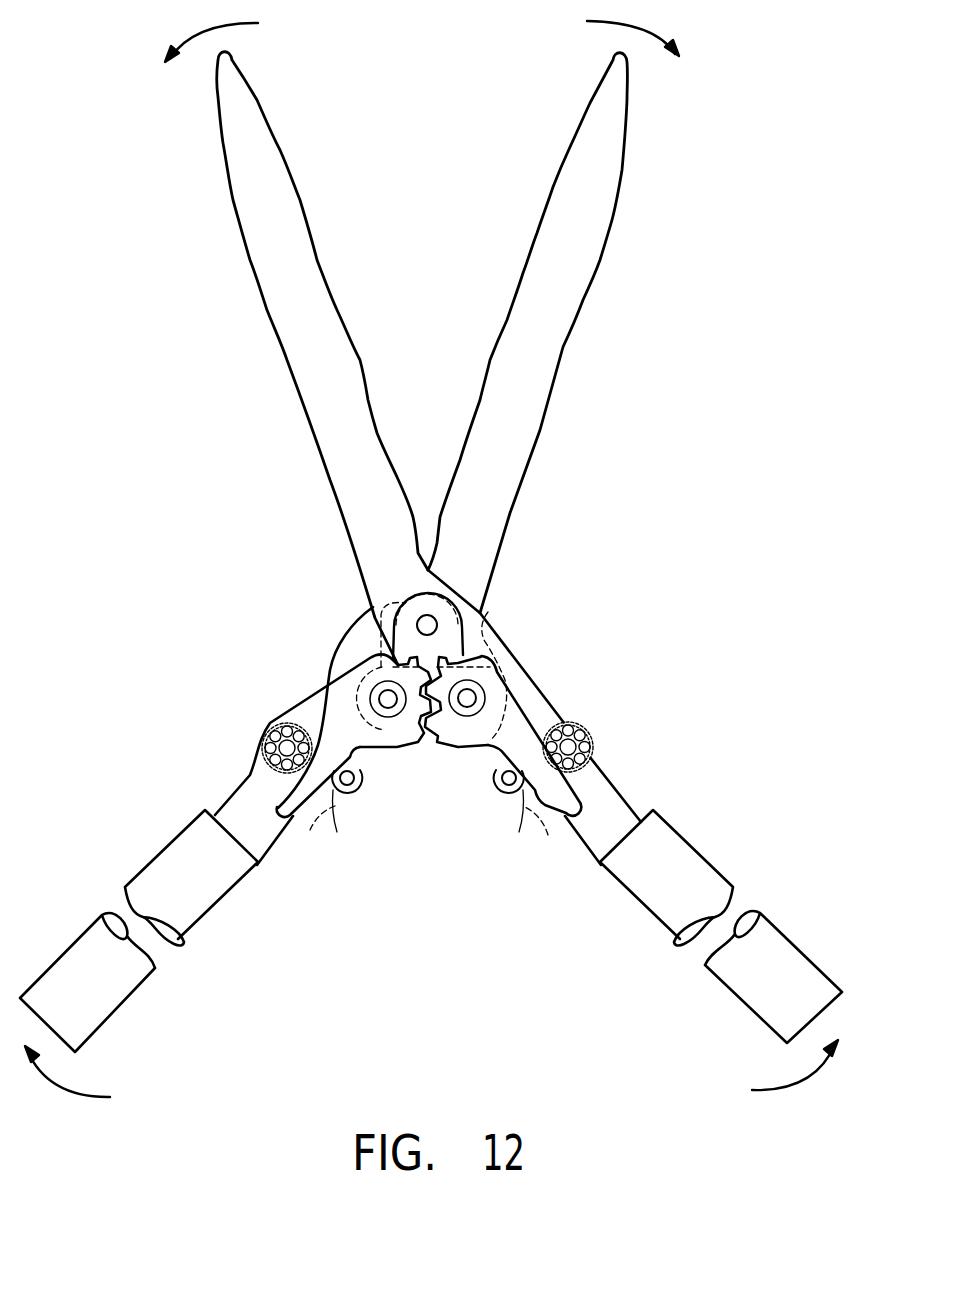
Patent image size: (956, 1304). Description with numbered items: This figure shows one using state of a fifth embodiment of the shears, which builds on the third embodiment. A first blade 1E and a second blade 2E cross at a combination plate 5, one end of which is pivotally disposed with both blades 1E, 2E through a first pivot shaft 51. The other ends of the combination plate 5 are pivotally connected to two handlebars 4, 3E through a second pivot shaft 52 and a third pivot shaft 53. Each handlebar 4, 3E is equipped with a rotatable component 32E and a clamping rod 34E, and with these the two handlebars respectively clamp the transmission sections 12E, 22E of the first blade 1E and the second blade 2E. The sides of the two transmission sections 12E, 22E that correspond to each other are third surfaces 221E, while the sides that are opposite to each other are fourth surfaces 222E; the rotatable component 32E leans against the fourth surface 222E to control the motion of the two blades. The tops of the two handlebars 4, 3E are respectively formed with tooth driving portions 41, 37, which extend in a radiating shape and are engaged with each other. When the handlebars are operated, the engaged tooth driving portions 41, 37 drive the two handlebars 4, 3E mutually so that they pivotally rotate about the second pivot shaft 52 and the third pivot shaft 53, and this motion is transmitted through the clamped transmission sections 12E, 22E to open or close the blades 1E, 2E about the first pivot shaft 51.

The first blade 1E is at (560, 288).
The second blade 2E is at (277, 229).
The handlebar 3E is at (690, 862).
The handlebar 4 is at (166, 871).
The combination plate 5 is at (488, 612).
The first pivot shaft 51 is at (427, 625).
The second pivot shaft 52 is at (388, 698).
The third pivot shaft 53 is at (468, 697).
The transmission section 12E is at (330, 725).
The transmission section 22E is at (512, 716).
The rotatable component 32E is at (252, 742).
The clamping rod 34E is at (347, 786).
The tooth driving portion 37 is at (440, 745).
The tooth driving portion 41 is at (414, 748).
The third surface 221E is at (310, 830).
The fourth surface 222E is at (280, 793).